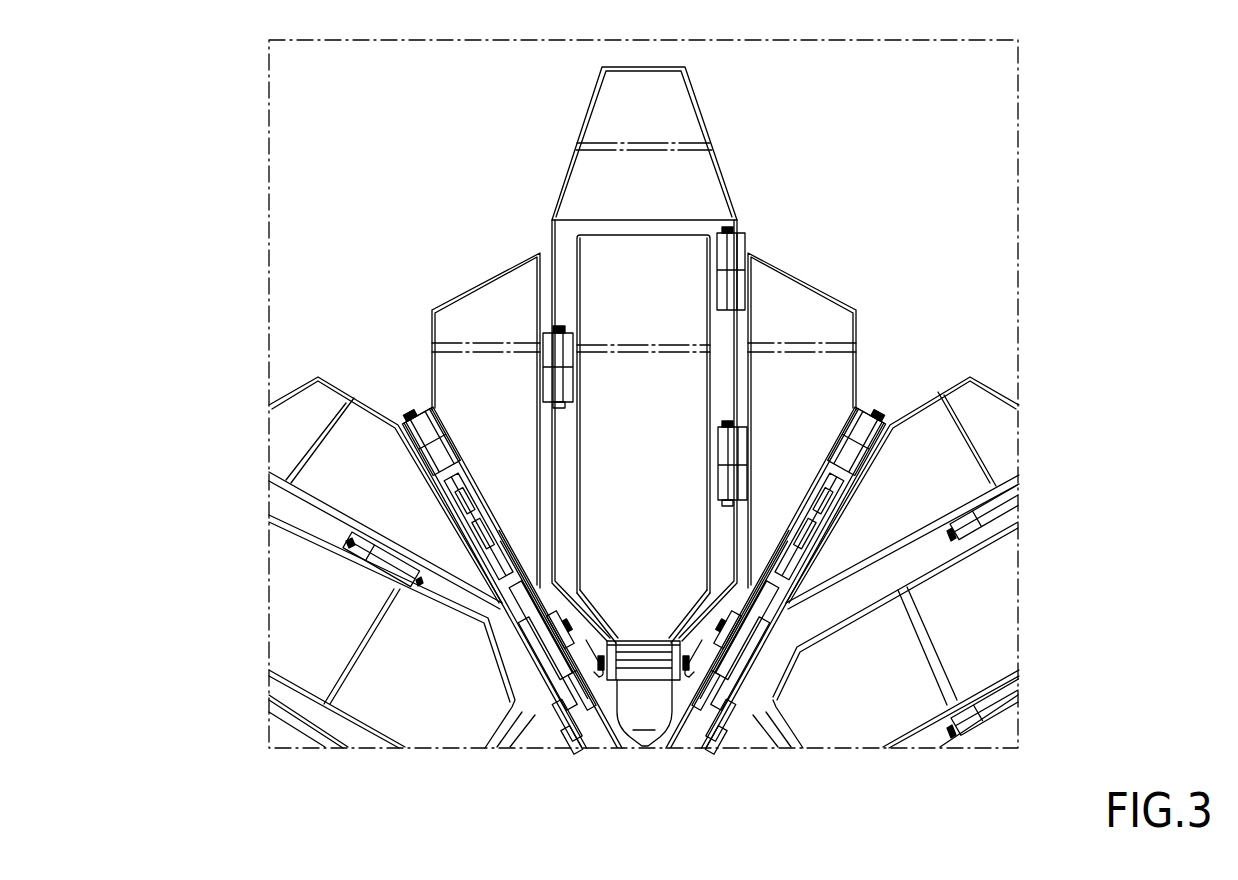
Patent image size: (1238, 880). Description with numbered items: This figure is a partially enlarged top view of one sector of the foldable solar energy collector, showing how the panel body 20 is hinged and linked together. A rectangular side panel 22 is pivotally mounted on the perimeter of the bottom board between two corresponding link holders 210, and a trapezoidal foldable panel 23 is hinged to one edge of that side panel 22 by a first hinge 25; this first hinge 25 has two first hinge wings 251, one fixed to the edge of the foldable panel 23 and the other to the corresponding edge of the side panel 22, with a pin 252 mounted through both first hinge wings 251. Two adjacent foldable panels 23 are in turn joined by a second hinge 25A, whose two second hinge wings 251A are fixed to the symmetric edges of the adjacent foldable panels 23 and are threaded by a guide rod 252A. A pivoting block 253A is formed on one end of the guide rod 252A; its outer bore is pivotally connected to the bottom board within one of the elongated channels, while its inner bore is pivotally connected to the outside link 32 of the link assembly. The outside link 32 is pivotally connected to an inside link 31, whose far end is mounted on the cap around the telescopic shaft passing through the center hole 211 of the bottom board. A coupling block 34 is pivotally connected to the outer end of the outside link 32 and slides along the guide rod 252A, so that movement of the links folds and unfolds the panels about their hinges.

The panel body 20 is at (607, 445).
The side panel 22 is at (668, 428).
The foldable panel 23 is at (472, 312).
The first hinge 25 is at (525, 314).
The first hinge wing 251 is at (556, 326).
The pin 252 is at (556, 336).
The second hinge wing 251A is at (440, 406).
The guide rod 252A is at (412, 410).
The second hinge 25A is at (438, 567).
The coupling block 34 is at (470, 500).
The outside link 32 is at (528, 560).
The pivoting block 253A is at (553, 630).
The inside link 31 is at (604, 736).
The center hole 211 is at (568, 722).
The link holder 210 is at (572, 748).